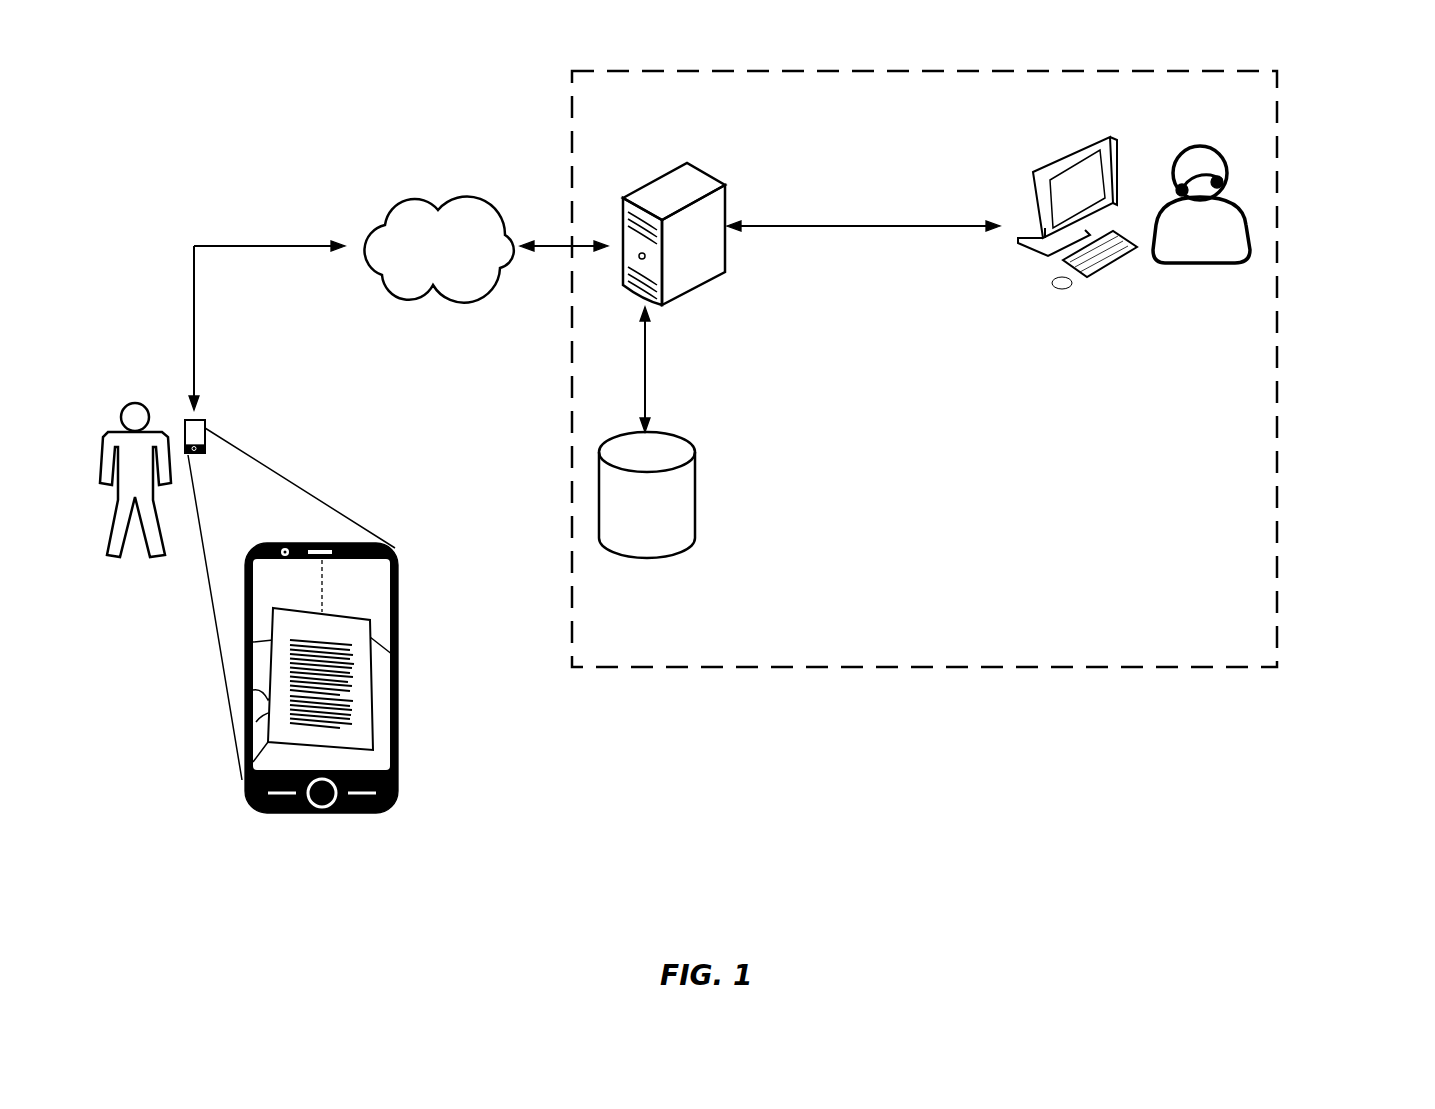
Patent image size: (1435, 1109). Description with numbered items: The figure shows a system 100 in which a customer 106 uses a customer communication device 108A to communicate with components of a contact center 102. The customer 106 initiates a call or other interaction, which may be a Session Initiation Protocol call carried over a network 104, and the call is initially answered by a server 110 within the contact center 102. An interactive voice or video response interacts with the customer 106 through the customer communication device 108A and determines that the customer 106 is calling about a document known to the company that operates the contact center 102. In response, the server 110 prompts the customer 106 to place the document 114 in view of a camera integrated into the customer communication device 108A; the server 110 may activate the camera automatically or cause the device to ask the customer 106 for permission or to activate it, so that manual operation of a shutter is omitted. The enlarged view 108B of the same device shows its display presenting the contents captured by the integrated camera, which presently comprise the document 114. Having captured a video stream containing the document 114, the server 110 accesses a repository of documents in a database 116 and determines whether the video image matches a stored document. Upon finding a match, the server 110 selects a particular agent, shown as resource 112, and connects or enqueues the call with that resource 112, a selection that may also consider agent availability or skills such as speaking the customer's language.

The system 100 is at (1336, 116).
The contact center 102 is at (993, 668).
The network 104 is at (458, 200).
The customer 106 is at (128, 406).
The customer communication device 108A is at (199, 428).
The enlarged view of customer communication device 108B is at (400, 598).
The server 110 is at (708, 172).
The resource 112 is at (1115, 322).
The document 114 is at (384, 673).
The database 116 is at (697, 492).